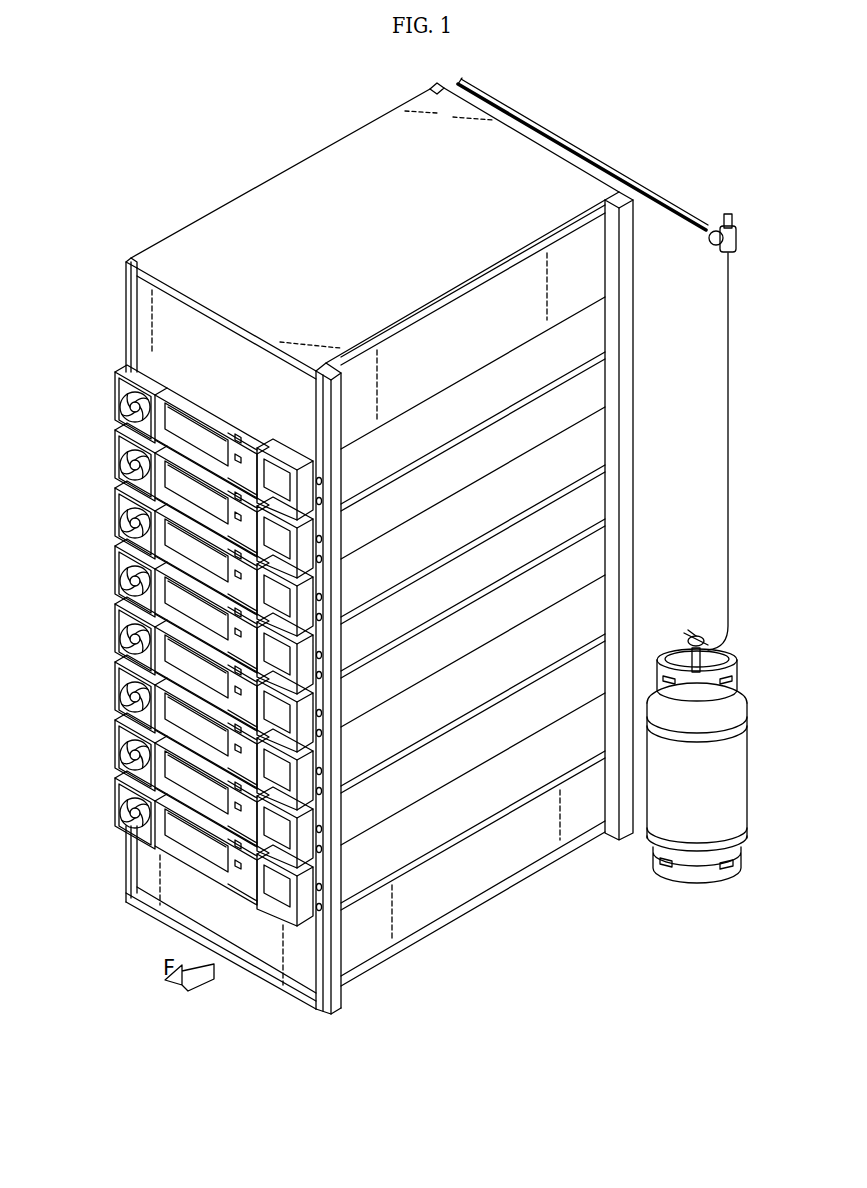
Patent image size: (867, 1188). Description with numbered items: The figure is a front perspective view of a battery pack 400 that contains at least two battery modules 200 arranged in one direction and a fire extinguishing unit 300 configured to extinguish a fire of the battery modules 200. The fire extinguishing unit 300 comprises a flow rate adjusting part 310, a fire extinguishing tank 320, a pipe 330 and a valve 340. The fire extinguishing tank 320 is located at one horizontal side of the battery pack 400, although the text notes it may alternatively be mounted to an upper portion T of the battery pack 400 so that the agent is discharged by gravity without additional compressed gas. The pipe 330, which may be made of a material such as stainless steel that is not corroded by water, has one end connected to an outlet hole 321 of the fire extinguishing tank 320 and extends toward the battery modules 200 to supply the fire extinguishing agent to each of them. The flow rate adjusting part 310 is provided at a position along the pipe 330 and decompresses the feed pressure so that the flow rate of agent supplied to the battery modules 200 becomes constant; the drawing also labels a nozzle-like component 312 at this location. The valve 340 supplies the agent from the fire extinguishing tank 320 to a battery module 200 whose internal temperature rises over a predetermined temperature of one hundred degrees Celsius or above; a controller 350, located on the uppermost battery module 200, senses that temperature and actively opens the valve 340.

The battery pack 400 is at (350, 548).
The battery module 200 is at (111, 398).
The controller 350 is at (141, 322).
The fire extinguishing unit 300 is at (634, 552).
The flow rate adjusting part 310 is at (742, 383).
The nozzle 312 is at (723, 214).
The fire extinguishing tank 320 is at (729, 766).
The outlet hole 321 is at (738, 661).
The pipe 330 is at (659, 192).
The valve 340 is at (705, 647).
The upper portion T is at (347, 309).